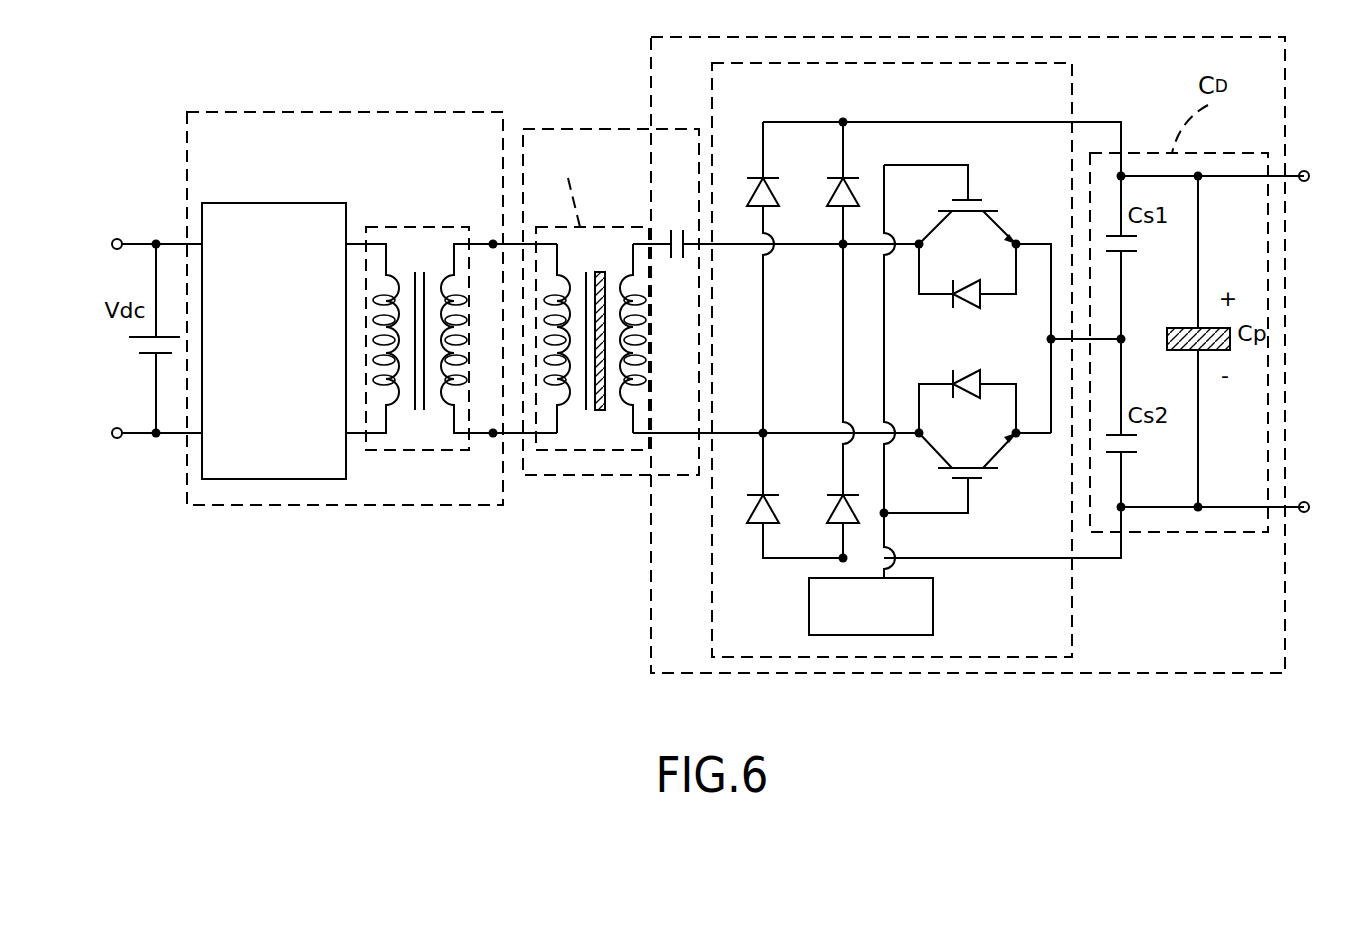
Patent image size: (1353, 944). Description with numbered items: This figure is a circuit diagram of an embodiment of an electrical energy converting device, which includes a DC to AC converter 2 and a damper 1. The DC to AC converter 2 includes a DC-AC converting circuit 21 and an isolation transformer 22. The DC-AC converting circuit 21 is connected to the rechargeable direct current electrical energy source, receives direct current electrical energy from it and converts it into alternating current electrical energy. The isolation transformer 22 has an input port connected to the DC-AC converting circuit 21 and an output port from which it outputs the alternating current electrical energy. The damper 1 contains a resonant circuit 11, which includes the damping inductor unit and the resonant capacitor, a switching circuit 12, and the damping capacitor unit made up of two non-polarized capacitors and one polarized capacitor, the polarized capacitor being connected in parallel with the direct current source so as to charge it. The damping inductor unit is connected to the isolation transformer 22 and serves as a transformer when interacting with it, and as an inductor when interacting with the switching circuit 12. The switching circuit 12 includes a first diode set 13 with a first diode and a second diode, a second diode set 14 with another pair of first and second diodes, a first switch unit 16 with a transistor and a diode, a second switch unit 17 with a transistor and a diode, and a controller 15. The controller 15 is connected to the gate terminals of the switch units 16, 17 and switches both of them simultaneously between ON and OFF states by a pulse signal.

The damper 1 is at (651, 55).
The DC to AC converter 2 is at (250, 110).
The resonant circuit 11 is at (674, 129).
The switching circuit 12 is at (1072, 92).
The first diode set 13 is at (774, 160).
The second diode set 14 is at (854, 160).
The controller 15 is at (933, 603).
The first switch unit 16 is at (1012, 520).
The second switch unit 17 is at (1013, 158).
The DC-AC converting circuit 21 is at (273, 203).
The isolation transformer 22 is at (411, 227).